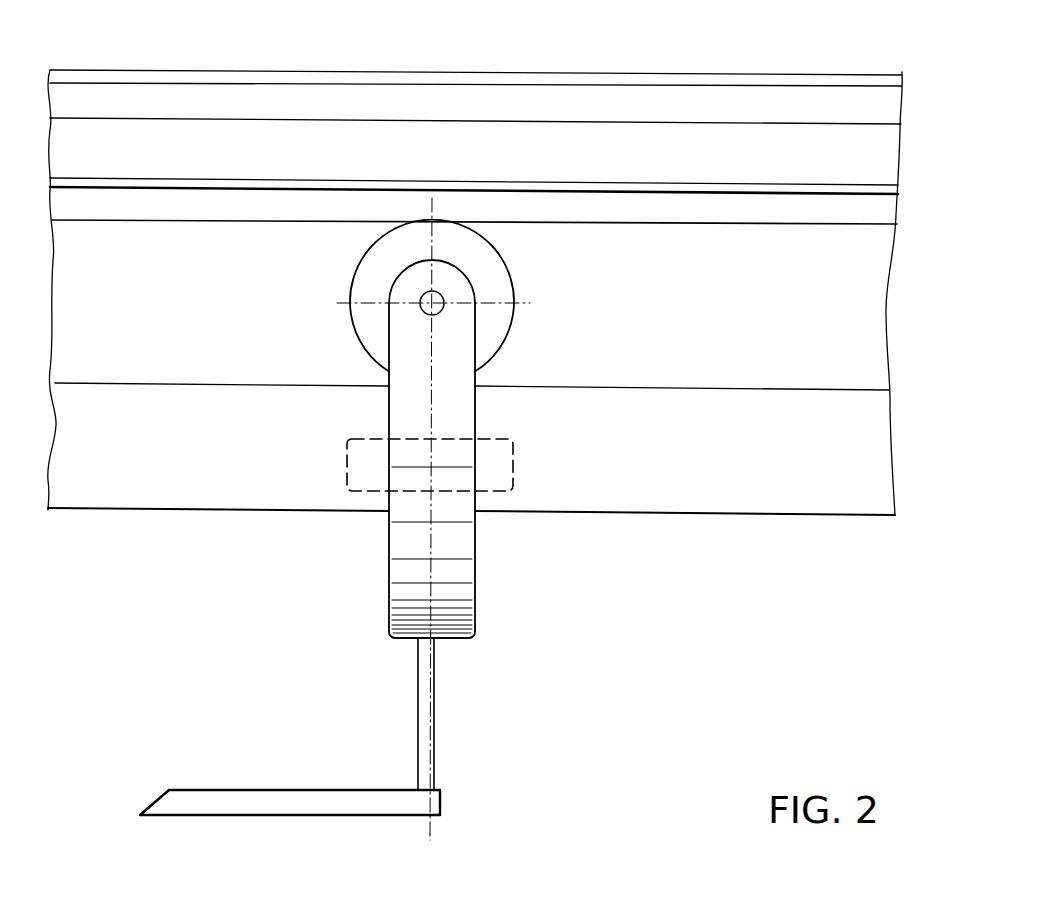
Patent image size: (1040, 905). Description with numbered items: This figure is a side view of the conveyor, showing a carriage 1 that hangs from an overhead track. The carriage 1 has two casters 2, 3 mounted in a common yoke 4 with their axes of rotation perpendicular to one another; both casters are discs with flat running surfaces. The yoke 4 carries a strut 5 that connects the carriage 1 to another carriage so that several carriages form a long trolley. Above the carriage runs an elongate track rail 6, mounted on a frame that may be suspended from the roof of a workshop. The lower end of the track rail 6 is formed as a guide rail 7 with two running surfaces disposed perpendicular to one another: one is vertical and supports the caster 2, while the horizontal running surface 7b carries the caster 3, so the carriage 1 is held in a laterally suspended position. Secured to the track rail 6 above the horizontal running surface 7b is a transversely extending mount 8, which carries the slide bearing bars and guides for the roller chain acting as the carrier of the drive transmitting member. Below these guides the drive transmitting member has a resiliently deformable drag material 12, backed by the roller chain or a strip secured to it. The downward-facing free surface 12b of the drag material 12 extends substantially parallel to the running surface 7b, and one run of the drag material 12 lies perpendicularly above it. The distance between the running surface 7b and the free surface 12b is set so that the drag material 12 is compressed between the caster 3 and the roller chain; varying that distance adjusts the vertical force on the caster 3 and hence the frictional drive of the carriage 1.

The carriage 1 is at (508, 555).
The caster 2 is at (492, 467).
The caster 3 is at (487, 315).
The yoke 4 is at (447, 607).
The strut 5 is at (433, 805).
The track rail 6 is at (870, 82).
The guide rail 7 is at (858, 431).
The running surface 7b is at (852, 384).
The mount 8 is at (876, 150).
The drag material 12 is at (880, 207).
The free surface 12b is at (876, 229).